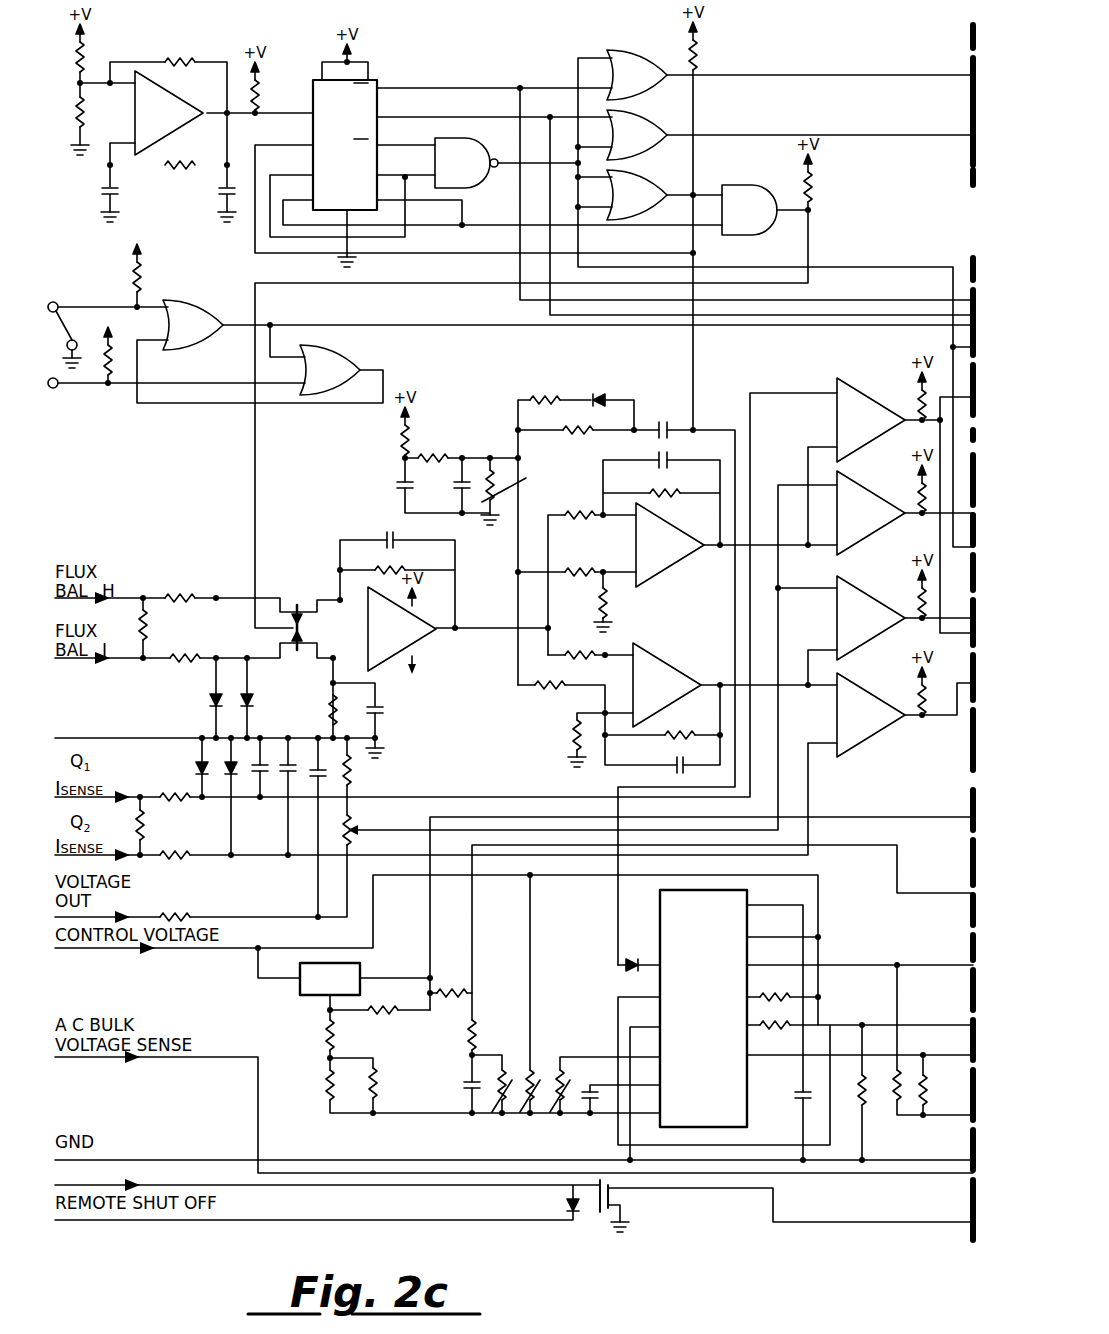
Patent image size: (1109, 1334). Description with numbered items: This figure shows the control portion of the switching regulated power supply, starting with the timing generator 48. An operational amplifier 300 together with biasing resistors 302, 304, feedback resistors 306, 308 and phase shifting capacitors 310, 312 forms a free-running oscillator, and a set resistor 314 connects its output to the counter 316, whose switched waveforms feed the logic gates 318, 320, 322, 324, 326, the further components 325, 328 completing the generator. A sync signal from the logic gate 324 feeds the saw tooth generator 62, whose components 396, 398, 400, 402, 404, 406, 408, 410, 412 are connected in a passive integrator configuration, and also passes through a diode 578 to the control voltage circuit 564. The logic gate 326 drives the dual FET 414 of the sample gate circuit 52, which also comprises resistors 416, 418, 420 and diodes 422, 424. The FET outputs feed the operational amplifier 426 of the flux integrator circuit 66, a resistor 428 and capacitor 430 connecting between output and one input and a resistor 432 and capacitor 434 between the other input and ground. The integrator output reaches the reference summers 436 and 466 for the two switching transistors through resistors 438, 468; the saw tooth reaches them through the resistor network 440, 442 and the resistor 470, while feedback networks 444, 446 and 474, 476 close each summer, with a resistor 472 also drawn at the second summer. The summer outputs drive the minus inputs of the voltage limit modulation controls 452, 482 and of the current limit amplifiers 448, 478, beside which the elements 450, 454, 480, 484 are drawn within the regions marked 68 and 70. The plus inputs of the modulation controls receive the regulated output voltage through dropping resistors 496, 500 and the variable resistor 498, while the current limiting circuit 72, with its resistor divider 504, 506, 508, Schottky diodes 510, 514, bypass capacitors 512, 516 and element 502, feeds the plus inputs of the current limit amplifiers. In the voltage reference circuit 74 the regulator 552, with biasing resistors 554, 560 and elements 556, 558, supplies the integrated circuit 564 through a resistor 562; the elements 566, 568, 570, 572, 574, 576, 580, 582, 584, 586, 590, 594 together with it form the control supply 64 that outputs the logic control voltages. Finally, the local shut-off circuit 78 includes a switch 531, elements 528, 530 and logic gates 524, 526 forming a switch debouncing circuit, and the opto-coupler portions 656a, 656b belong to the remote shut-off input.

The operational amplifier 300 is at (185, 126).
The biasing resistor 302 is at (98, 44).
The biasing resistor 304 is at (101, 114).
The feedback resistor 306 is at (182, 50).
The feedback resistor 308 is at (182, 155).
The phase shifting capacitor 310 is at (129, 196).
The phase shifting capacitor 312 is at (211, 196).
The set resistor 314 is at (271, 77).
The counter 316 is at (378, 74).
The logic gate 318 is at (478, 174).
The logic gate 320 is at (649, 86).
The logic gate 322 is at (649, 146).
The logic gate 324 is at (649, 206).
The electrical component 325 is at (709, 37).
The logic gate 326 is at (765, 221).
The electrical component 328 is at (824, 169).
The timing generator 48 is at (480, 78).
The local shut-off circuit 78 is at (95, 285).
The logic gate 524 is at (208, 336).
The logic gate 526 is at (343, 384).
The resistor 528 is at (156, 259).
The resistor 530 is at (118, 366).
The switch 531 is at (74, 345).
The saw tooth generator 62 is at (472, 416).
The saw tooth generator component 396 is at (665, 419).
The saw tooth generator component 398 is at (602, 390).
The saw tooth generator component 400 is at (542, 389).
The saw tooth generator component 402 is at (574, 441).
The saw tooth generator component 404 is at (388, 422).
The saw tooth generator component 406 is at (384, 488).
The saw tooth generator component 408 is at (435, 447).
The saw tooth generator component 410 is at (448, 488).
The saw tooth generator component 412 is at (522, 484).
The dual field effect transistor 414 is at (294, 598).
The resistor 416 is at (177, 587).
The resistor 418 is at (161, 626).
The resistor 420 is at (179, 670).
The diode 422 is at (200, 701).
The diode 424 is at (264, 693).
The operational amplifier 426 is at (417, 640).
The resistor 428 is at (403, 560).
The capacitor 430 is at (371, 531).
The resistor 432 is at (316, 710).
The capacitor 434 is at (395, 715).
The Q1 reference summer 436 is at (684, 557).
The resistor 438 is at (576, 505).
The resistor network 440 is at (576, 562).
The resistor network 442 is at (622, 603).
The feedback resistor 444 is at (682, 485).
The feedback capacitor 446 is at (682, 455).
The Q1 current limit amplifier 448 is at (885, 432).
The resistor 450 is at (909, 387).
The Q1 voltage limit modulation control 452 is at (885, 525).
The resistor 454 is at (909, 480).
The Q2 reference summer 466 is at (680, 696).
The resistor 468 is at (575, 645).
The resistor 470 is at (542, 676).
The resistor 472 is at (558, 734).
The feedback resistor 474 is at (679, 724).
The feedback capacitor 476 is at (658, 760).
The Q2 current limit amplifier 478 is at (885, 727).
The resistor 480 is at (909, 682).
The Q2 voltage limit modulation control 482 is at (885, 630).
The resistor 484 is at (909, 585).
The sample gate circuit 52 is at (118, 560).
The flux integrator circuit 66 is at (442, 658).
The comparator circuit 68 is at (722, 410).
The comparator circuit 70 is at (788, 760).
The current limiting circuit 72 is at (118, 722).
The dropping resistor 496 is at (175, 906).
The variable resistor 498 is at (366, 825).
The dropping resistor 500 is at (366, 772).
The capacitor 502 is at (300, 785).
The resistor 504 is at (177, 809).
The resistor 506 is at (160, 827).
The resistor 508 is at (175, 866).
The Schottky diode 510 is at (200, 766).
The bypass capacitor 512 is at (215, 724).
The Schottky diode 514 is at (226, 772).
The bypass capacitor 516 is at (258, 780).
The voltage reference circuit 74 is at (238, 997).
The regulator 552 is at (345, 990).
The biasing resistor 554 is at (311, 1035).
The resistor 556 is at (311, 1085).
The resistor 558 is at (392, 1083).
The biasing resistor 560 is at (386, 1021).
The resistor 562 is at (452, 981).
The voltage regulator integrated circuit 564 is at (715, 1010).
The control supply element 566 is at (454, 1035).
The control supply element 568 is at (454, 1091).
The control supply element 570 is at (494, 1106).
The control supply element 572 is at (536, 1078).
The control supply element 574 is at (578, 1084).
The control supply element 576 is at (586, 1110).
The diode 578 is at (623, 976).
The control supply element 580 is at (774, 985).
The control supply element 582 is at (774, 1037).
The control supply element 584 is at (784, 1096).
The control supply element 586 is at (864, 1100).
The control supply element 590 is at (900, 1075).
The control supply element 594 is at (942, 1090).
The control supply 64 is at (758, 1220).
The opto-coupler 656a is at (575, 1222).
The opto-coupler 656b is at (638, 1198).